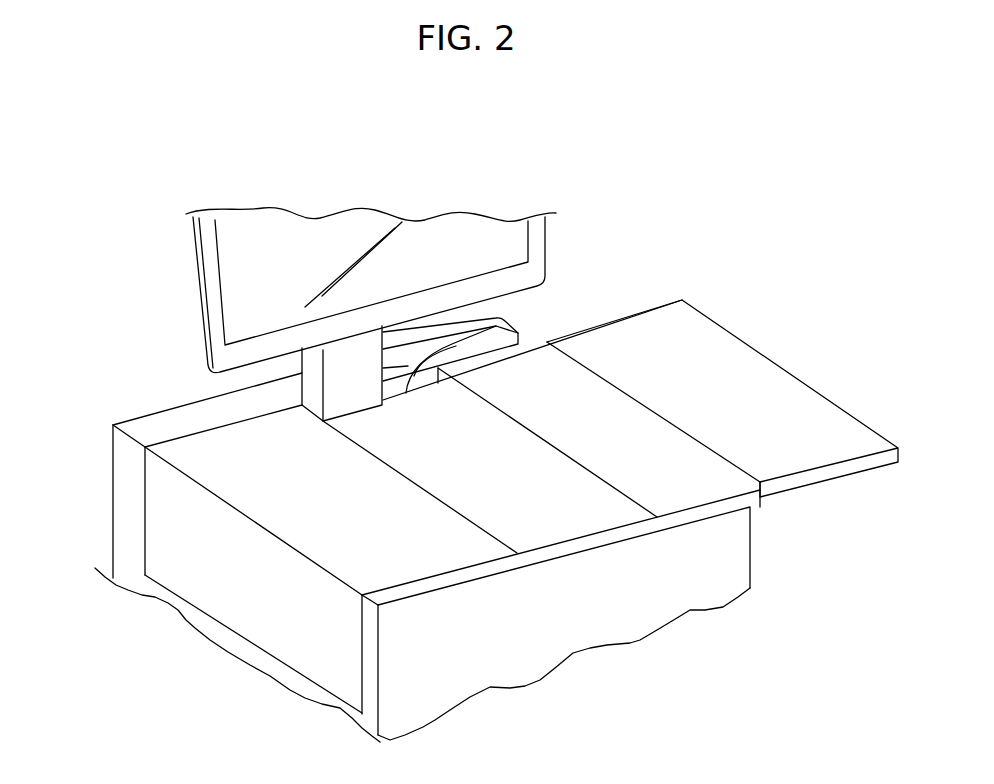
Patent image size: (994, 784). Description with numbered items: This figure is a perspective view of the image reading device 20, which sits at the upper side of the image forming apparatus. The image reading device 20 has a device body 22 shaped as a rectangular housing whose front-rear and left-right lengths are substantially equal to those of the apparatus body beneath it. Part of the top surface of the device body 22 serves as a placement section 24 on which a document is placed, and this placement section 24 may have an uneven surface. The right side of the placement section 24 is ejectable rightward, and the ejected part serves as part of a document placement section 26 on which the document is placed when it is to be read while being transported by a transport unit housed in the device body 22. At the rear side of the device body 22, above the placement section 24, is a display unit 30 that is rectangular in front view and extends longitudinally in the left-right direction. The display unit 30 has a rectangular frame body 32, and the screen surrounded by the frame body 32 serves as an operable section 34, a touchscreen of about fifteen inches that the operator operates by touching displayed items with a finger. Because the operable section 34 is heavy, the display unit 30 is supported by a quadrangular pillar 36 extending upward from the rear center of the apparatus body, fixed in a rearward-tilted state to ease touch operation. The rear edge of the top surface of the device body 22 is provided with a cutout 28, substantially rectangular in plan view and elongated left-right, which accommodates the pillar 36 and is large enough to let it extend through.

The image reading device 20 is at (113, 416).
The device body 22 is at (122, 508).
The placement section 24 is at (222, 447).
The document placement section 26 is at (733, 372).
The cutout 28 is at (507, 328).
The display unit 30 is at (190, 282).
The frame body 32 is at (538, 236).
The operable section 34 is at (290, 240).
The pillar 36 is at (349, 380).